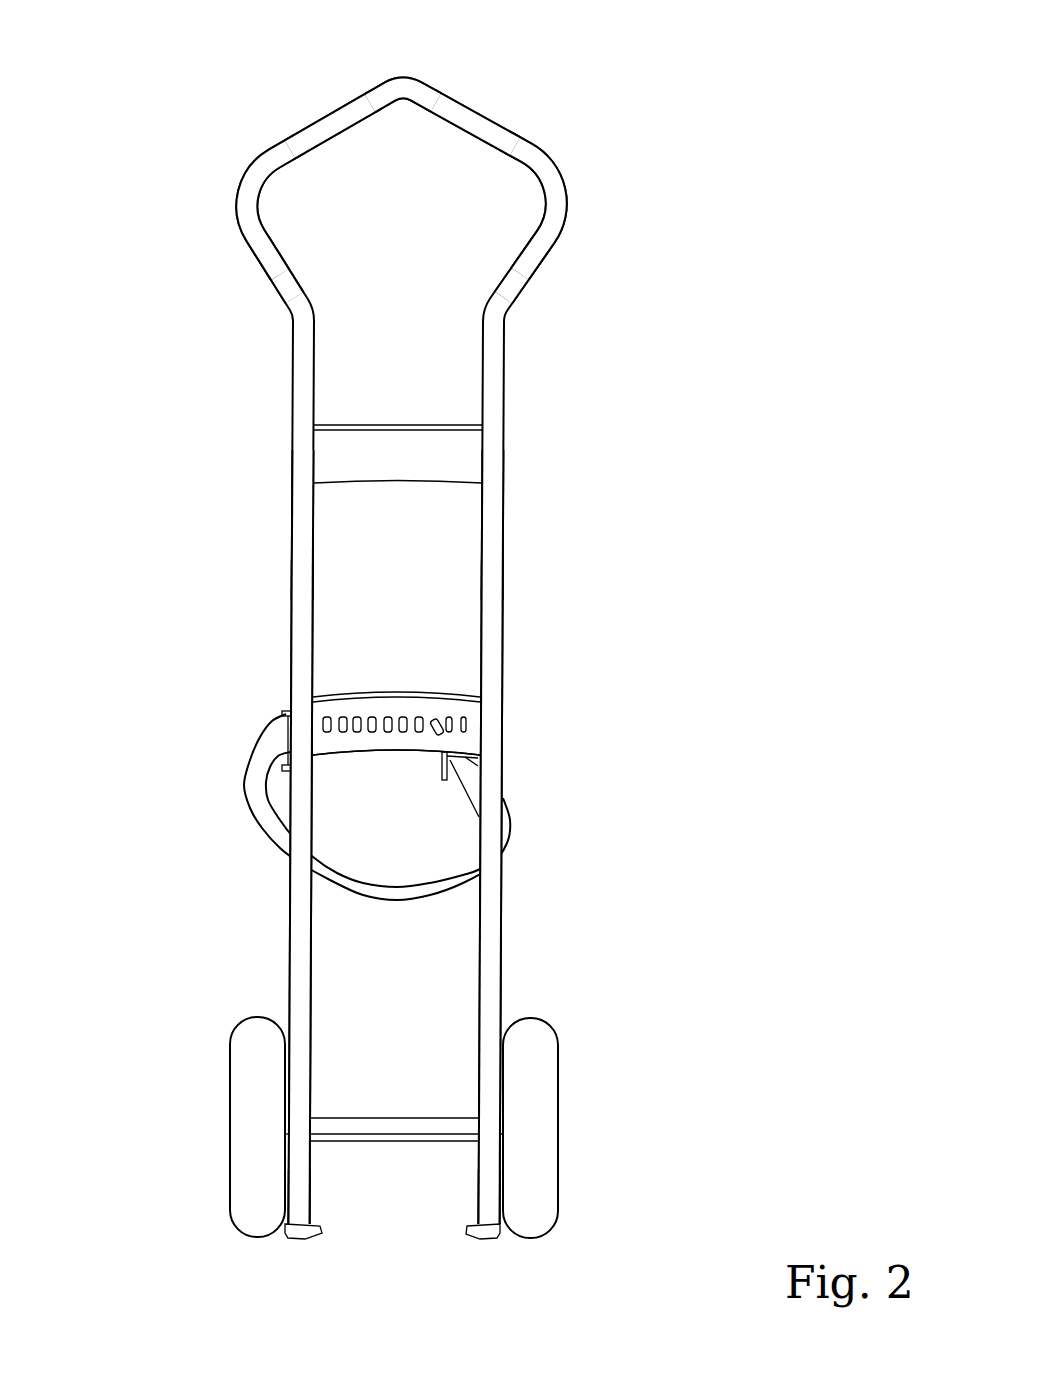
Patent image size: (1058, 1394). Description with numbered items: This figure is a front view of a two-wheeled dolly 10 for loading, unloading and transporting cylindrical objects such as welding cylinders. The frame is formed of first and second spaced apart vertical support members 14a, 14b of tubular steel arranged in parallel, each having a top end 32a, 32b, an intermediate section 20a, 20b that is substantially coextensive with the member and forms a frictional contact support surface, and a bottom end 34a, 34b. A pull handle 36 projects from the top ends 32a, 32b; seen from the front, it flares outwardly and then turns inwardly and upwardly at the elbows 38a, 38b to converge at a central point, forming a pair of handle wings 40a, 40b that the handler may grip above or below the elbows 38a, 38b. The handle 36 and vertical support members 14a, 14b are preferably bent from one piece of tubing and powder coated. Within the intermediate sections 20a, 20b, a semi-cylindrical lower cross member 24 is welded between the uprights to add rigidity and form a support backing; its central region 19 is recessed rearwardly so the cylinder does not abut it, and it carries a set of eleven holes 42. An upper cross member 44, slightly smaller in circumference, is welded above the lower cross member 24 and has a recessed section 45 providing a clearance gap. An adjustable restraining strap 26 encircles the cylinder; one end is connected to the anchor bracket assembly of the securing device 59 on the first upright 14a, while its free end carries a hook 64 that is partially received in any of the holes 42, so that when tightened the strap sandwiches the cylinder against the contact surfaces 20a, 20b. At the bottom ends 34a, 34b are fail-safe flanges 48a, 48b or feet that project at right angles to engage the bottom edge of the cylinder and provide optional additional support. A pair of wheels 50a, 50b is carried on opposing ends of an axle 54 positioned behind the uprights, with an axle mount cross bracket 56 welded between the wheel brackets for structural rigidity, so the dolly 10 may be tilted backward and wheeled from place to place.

The dolly 10 is at (126, 539).
The first vertical support member 14a is at (292, 596).
The second vertical support member 14b is at (505, 600).
The central region 19 is at (405, 742).
The intermediate section 20a is at (300, 518).
The intermediate section 20b is at (497, 522).
The lower cross member 24 is at (418, 692).
The restraining strap 26 is at (245, 775).
The top end 32a is at (292, 318).
The top end 32b is at (505, 322).
The bottom end 34a is at (285, 1236).
The bottom end 34b is at (502, 1238).
The pull handle 36 is at (427, 86).
The elbow 38a is at (235, 203).
The elbow 38b is at (567, 206).
The handle wing 40a is at (292, 135).
The handle wing 40b is at (518, 135).
The holes 42 is at (387, 732).
The upper cross member 44 is at (402, 425).
The recessed section 45 is at (392, 483).
The fail-safe flange 48a is at (305, 1241).
The fail-safe flange 48b is at (470, 1241).
The wheel 50a is at (230, 1030).
The wheel 50b is at (555, 1030).
The axle 54 is at (440, 1136).
The axle mount cross bracket 56 is at (392, 1143).
The securing device 59 is at (283, 703).
The hook 64 is at (442, 776).